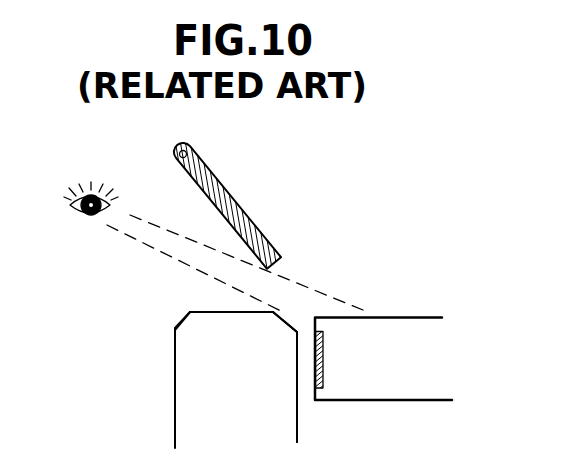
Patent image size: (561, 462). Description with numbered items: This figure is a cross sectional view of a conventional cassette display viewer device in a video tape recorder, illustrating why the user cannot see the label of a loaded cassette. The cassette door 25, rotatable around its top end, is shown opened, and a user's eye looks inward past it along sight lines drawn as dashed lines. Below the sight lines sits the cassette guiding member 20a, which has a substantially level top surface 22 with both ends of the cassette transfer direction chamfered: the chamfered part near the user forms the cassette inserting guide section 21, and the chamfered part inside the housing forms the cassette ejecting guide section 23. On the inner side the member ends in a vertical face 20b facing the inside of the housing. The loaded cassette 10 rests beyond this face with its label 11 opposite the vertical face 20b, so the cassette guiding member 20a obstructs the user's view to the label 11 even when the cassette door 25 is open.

The cassette 10 is at (399, 405).
The label 11 is at (322, 360).
The cassette guiding member 20a is at (161, 390).
The vertical face 20b is at (297, 412).
The cassette inserting guide section 21 is at (177, 323).
The top surface 22 is at (220, 312).
The cassette ejecting guide section 23 is at (288, 322).
The cassette door 25 is at (233, 205).